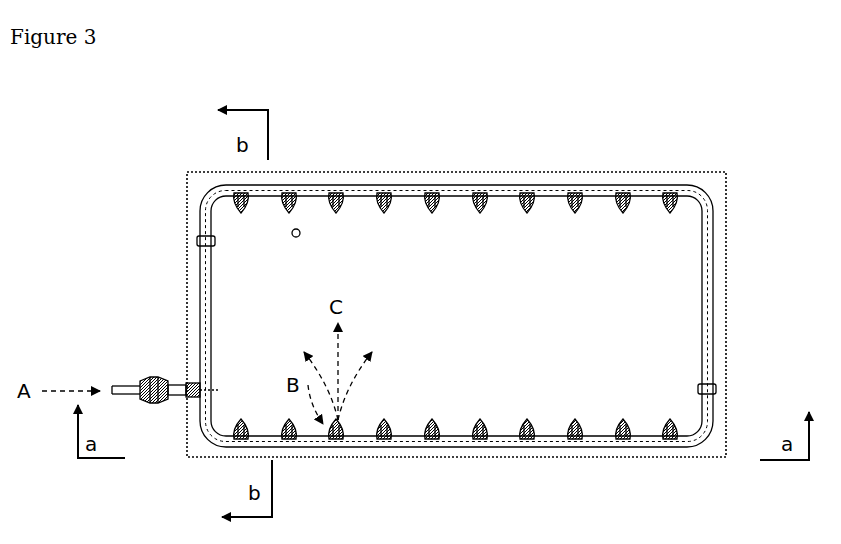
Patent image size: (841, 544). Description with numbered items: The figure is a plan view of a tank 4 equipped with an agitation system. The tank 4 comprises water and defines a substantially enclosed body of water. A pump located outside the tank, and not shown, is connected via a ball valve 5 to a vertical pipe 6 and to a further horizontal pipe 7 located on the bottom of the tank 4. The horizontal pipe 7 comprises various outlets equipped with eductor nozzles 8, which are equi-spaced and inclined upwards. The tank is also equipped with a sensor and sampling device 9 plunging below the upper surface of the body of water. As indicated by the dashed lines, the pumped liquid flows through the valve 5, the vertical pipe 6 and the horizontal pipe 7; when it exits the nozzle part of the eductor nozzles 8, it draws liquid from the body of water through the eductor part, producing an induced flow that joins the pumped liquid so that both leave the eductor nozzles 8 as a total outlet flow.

The tank 4 is at (195, 186).
The ball valve 5 is at (144, 390).
The vertical pipe 6 is at (200, 384).
The horizontal pipe 7 is at (704, 298).
The eductor nozzles 8 is at (432, 196).
The sensor and sampling device 9 is at (298, 229).